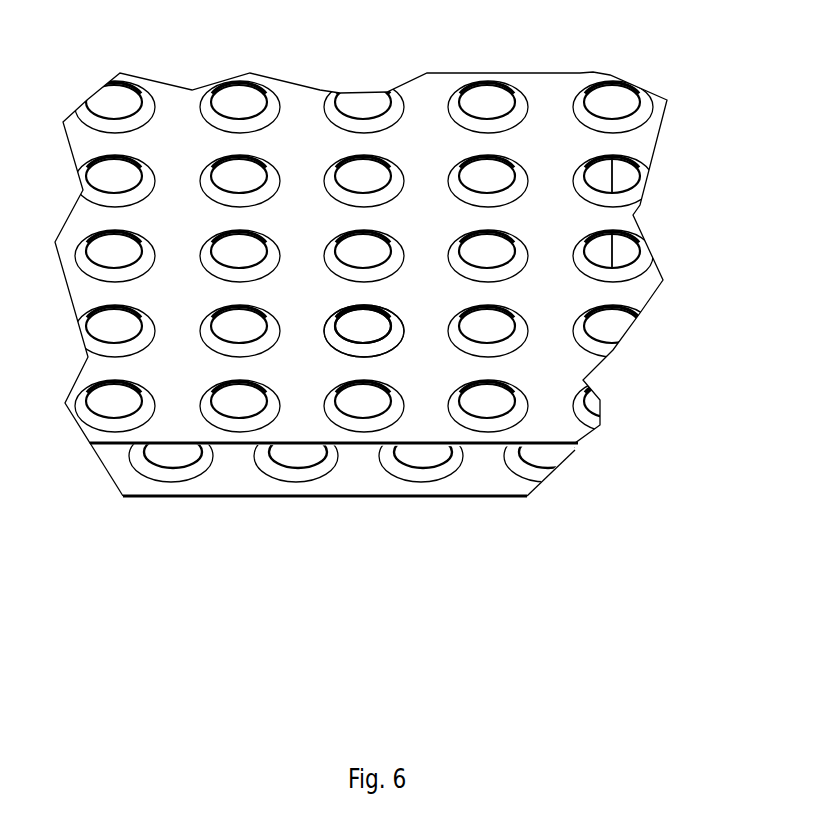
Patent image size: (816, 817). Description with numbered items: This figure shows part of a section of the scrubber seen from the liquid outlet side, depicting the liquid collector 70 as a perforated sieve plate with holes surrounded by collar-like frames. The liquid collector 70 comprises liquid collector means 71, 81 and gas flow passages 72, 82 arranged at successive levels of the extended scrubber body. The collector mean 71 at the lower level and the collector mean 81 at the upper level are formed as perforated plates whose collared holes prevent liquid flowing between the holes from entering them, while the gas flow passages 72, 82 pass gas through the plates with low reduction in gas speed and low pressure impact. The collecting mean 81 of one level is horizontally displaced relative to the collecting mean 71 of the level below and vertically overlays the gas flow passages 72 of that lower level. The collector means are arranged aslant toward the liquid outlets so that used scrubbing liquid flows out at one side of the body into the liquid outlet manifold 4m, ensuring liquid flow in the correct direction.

The liquid outlet manifold 4m is at (648, 21).
The liquid collector 70 is at (722, 281).
The liquid collector mean 71 is at (252, 485).
The gas flow passage 72 is at (173, 457).
The liquid collector mean 81 is at (325, 318).
The gas flow passage 82 is at (373, 323).